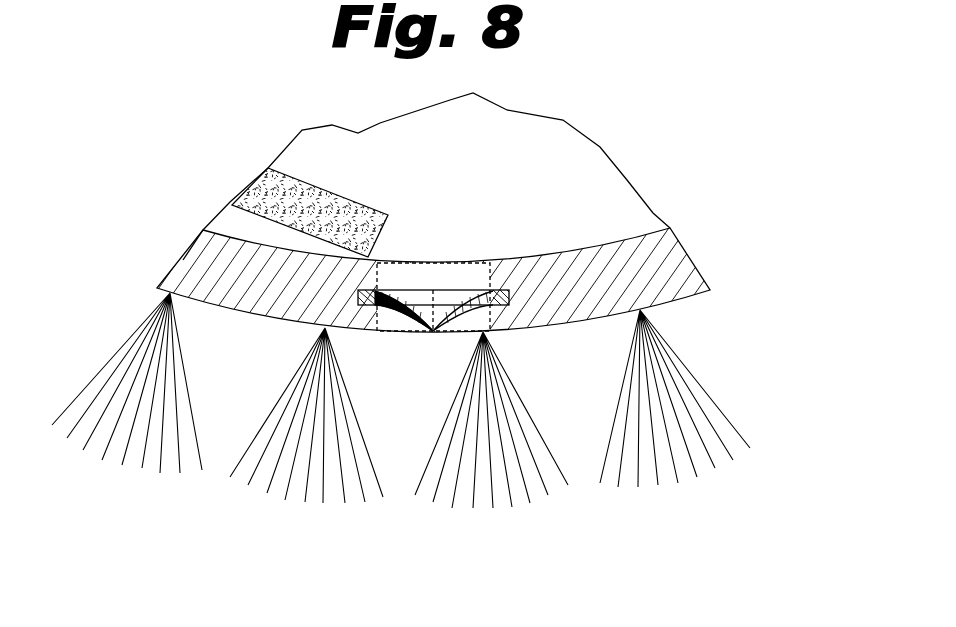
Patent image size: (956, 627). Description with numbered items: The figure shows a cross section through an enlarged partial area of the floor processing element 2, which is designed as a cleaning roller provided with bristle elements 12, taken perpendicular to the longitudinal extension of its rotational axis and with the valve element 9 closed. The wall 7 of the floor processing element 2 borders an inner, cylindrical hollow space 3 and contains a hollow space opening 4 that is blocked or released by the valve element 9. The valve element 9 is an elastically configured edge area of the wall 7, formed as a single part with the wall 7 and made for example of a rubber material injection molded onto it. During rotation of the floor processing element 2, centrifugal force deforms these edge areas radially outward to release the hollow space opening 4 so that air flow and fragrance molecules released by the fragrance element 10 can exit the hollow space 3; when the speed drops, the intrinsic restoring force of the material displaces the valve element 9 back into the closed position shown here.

The floor processing element 2 is at (424, 375).
The hollow space 3 is at (426, 176).
The hollow space opening 4 is at (401, 364).
The wall 7 is at (663, 265).
The valve element 9 is at (389, 336).
The fragrance element 10 is at (298, 190).
The bristle elements 12 is at (138, 433).